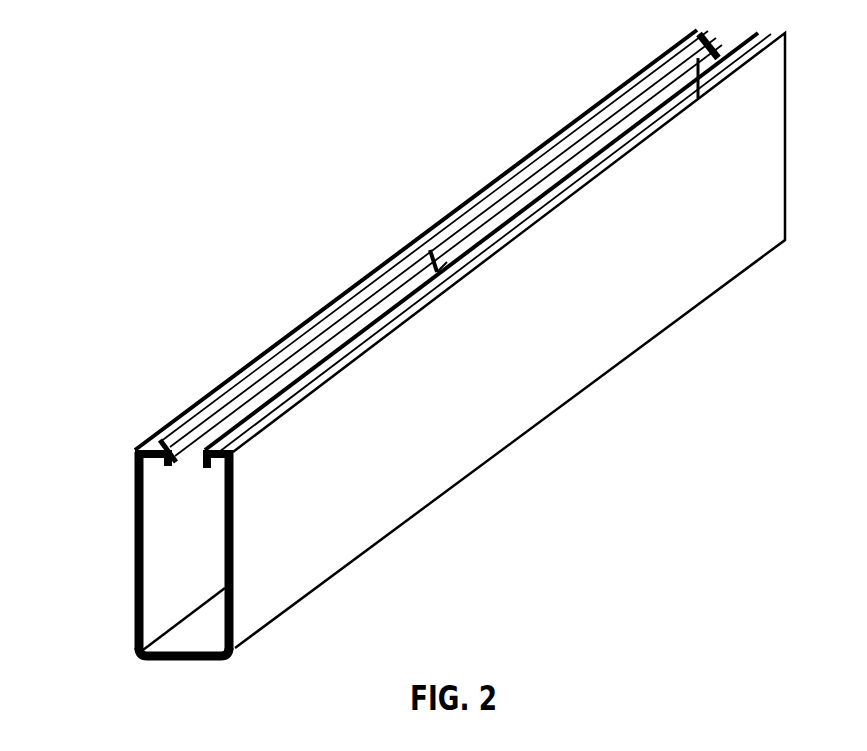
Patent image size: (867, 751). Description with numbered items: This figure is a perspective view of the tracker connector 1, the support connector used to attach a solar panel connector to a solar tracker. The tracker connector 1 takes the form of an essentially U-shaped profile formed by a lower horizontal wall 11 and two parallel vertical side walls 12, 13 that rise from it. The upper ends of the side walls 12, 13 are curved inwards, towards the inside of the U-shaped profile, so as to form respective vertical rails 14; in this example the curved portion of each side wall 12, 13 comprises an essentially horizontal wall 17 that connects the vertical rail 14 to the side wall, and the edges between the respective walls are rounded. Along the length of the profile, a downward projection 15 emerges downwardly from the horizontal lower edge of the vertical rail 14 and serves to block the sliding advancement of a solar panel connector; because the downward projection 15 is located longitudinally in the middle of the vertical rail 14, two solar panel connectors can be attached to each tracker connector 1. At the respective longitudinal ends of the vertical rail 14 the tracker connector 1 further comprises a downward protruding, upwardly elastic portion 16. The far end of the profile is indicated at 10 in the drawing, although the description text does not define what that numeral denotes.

The tracker connector 1 is at (270, 65).
The far end of channel 10 is at (692, 49).
The lower horizontal wall 11 is at (186, 664).
The vertical side wall 12 is at (317, 542).
The vertical side wall 13 is at (160, 567).
The vertical rail 14 is at (293, 343).
The downward projection 15 is at (420, 240).
The elastic portion 16 is at (140, 460).
The horizontal wall 17 is at (183, 430).